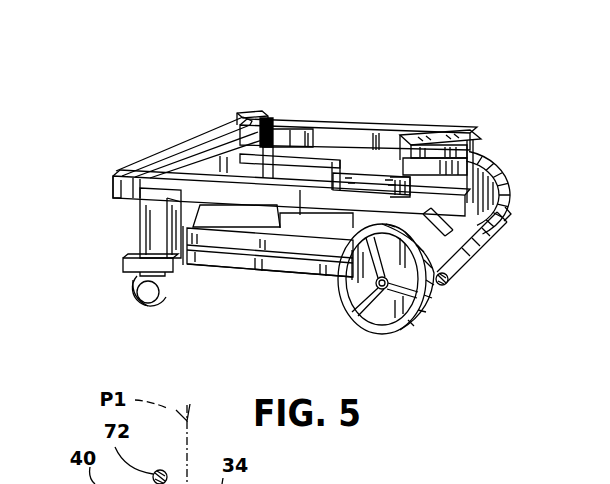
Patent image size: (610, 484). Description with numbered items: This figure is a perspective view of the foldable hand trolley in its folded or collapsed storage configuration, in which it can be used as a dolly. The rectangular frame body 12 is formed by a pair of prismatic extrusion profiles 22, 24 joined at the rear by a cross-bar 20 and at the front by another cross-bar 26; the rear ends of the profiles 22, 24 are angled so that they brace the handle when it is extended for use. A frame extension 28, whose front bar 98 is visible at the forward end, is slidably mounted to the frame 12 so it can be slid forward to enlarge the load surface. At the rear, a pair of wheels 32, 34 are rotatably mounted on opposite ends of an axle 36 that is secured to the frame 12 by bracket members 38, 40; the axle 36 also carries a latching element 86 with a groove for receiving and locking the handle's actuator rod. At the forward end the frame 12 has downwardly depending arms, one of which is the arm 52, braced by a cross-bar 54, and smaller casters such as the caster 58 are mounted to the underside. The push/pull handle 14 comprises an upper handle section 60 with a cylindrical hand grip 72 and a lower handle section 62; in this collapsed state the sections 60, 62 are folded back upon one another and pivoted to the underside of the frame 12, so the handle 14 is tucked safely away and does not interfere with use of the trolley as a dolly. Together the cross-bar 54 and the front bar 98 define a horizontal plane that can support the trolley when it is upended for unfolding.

The frame body 12 is at (359, 113).
The push/pull handle 14 is at (217, 272).
The cross-bar 20 is at (398, 168).
The prismatic extrusion profile 22 is at (332, 128).
The prismatic extrusion profile 24 is at (157, 193).
The cross-bar 26 is at (251, 120).
The frame extension 28 is at (286, 146).
The wheel 32 is at (505, 204).
The wheel 34 is at (400, 308).
The axle 36 is at (497, 241).
The bracket member 38 is at (470, 182).
The bracket member 40 is at (341, 226).
The downwardly depending arm 52 is at (155, 236).
The cross-bar 54 is at (133, 271).
The caster 58 is at (137, 304).
The upper handle section 60 is at (241, 266).
The lower handle section 62 is at (292, 250).
The hand grip 72 is at (463, 261).
The latching element 86 is at (453, 279).
The front bar 98 is at (172, 155).